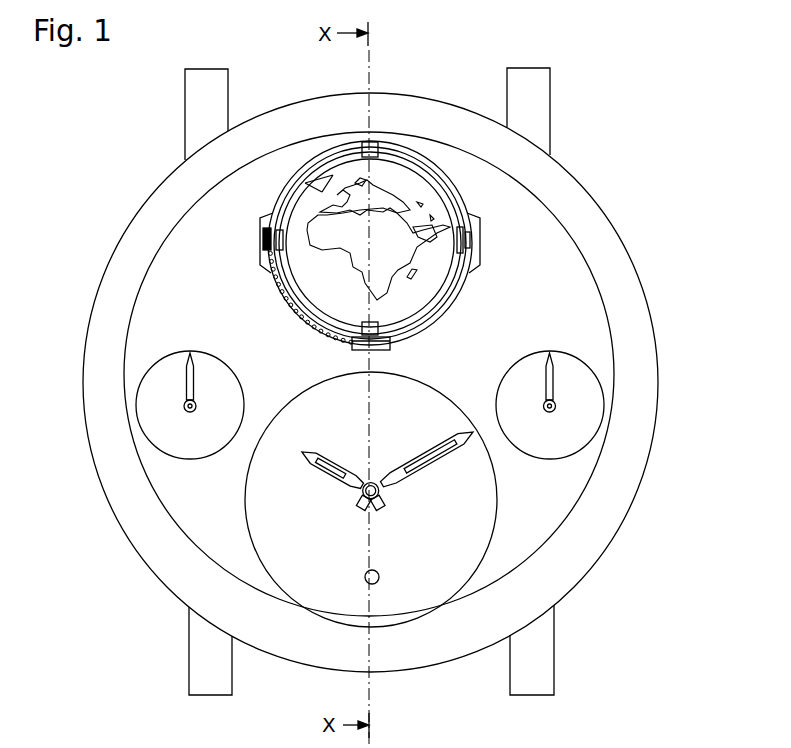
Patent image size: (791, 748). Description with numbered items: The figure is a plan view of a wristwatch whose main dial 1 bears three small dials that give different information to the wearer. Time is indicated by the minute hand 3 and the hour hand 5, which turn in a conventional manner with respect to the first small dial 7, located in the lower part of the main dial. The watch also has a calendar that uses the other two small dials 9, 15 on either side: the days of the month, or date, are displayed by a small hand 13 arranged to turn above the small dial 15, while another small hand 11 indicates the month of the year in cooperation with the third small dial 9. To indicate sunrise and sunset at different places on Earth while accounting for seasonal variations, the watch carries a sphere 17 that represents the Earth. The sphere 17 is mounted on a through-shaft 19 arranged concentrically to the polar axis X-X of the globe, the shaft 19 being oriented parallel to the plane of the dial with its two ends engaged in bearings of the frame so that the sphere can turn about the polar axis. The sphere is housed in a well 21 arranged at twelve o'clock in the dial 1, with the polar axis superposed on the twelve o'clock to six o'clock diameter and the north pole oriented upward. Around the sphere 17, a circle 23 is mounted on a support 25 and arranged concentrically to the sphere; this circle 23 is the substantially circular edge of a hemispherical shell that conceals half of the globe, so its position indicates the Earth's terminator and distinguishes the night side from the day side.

The main dial 1 is at (531, 223).
The minute hand 3 is at (410, 466).
The hour hand 5 is at (340, 470).
The first small dial 7 is at (265, 492).
The third small dial 9 is at (155, 413).
The small hand 11 is at (188, 372).
The small hand 13 is at (552, 393).
The small dial 15 is at (585, 380).
The sphere 17 is at (305, 183).
The through-shaft 19 is at (374, 147).
The well 21 is at (256, 218).
The circle 23 is at (437, 170).
The support 25 is at (463, 280).